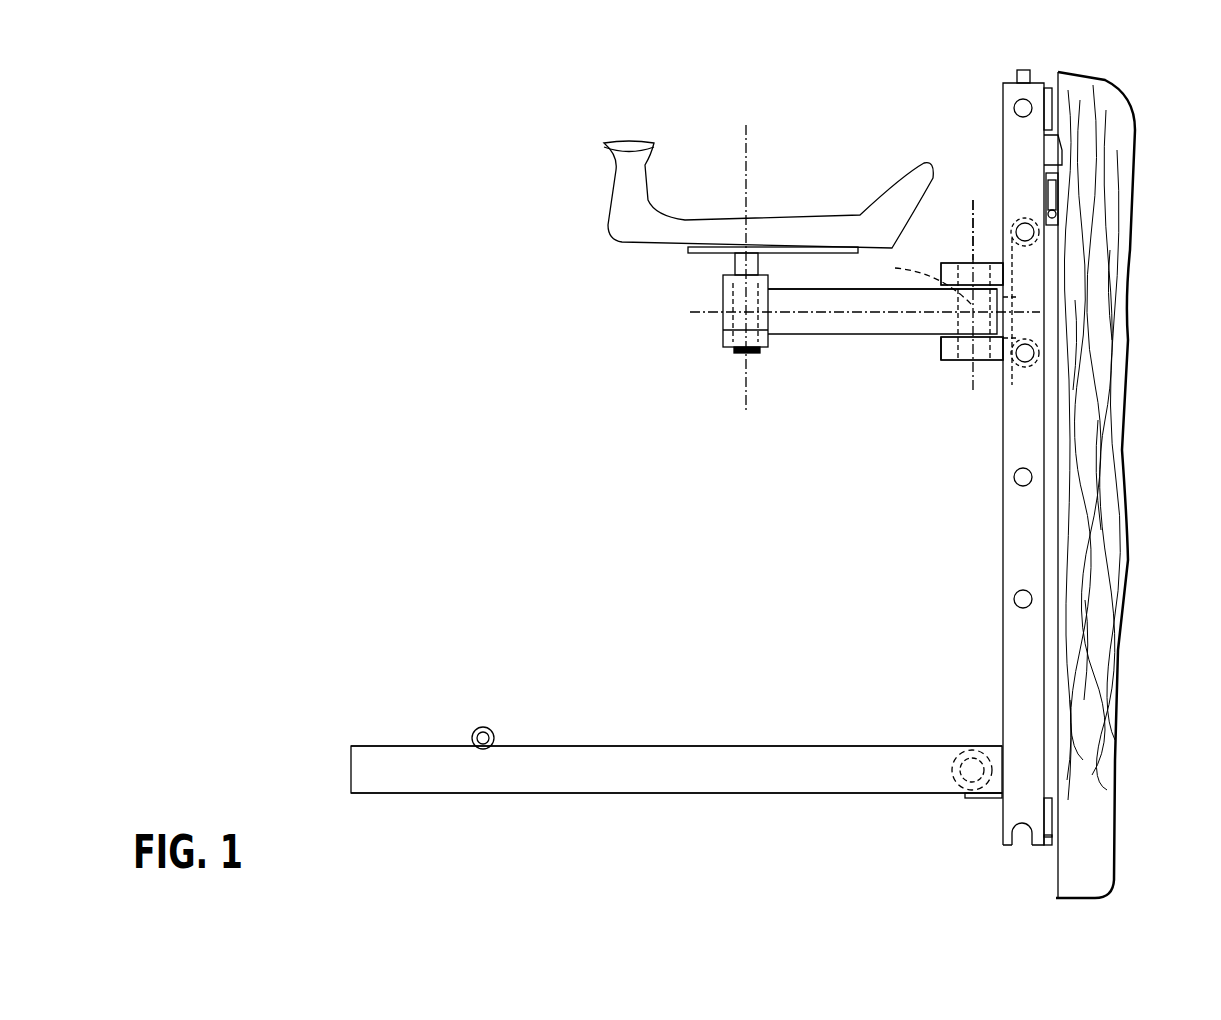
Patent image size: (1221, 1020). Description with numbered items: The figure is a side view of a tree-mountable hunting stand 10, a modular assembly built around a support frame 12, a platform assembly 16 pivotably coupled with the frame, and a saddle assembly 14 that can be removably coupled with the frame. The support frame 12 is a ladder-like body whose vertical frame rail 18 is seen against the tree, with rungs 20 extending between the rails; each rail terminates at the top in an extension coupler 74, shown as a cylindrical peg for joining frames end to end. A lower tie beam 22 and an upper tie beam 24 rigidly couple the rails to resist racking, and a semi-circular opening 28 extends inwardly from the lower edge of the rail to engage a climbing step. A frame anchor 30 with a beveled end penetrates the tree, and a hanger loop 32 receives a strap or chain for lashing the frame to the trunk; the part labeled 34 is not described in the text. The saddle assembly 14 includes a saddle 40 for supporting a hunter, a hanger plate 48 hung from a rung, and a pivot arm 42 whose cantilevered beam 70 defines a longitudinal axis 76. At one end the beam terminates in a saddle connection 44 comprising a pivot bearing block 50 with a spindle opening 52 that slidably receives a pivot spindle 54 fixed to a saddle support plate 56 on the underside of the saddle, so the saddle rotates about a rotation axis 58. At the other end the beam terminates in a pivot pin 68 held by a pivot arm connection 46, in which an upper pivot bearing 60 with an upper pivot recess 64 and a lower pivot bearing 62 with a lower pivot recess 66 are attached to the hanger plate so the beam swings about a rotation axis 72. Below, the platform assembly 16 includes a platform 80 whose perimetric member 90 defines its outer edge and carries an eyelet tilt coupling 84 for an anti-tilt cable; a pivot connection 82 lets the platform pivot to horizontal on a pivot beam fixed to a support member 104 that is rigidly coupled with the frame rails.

The tree-mountable hunting stand 10 is at (401, 211).
The support frame 12 is at (977, 651).
The saddle assembly 14 is at (740, 378).
The platform assembly 16 is at (578, 731).
The frame rail 18 is at (1030, 667).
The rung 20 is at (1025, 108).
The lower tie beam 22 is at (1052, 798).
The upper tie beam 24 is at (1052, 120).
The semi-circular opening 28 is at (1022, 843).
The frame anchor 30 is at (1060, 152).
The hanger loop 32 is at (1058, 190).
The fastener 34 is at (1056, 215).
The saddle 40 is at (777, 205).
The pivot arm 42 is at (869, 338).
The saddle connection 44 is at (722, 310).
The pivot arm connection 46 is at (958, 362).
The hanger plate 48 is at (1020, 297).
The pivot bearing block 50 is at (728, 333).
The spindle opening 52 is at (748, 355).
The pivot spindle 54 is at (723, 292).
The saddle support plate 56 is at (715, 250).
The rotation axis 58 is at (746, 130).
The upper pivot bearing 60 is at (946, 272).
The lower pivot bearing 62 is at (946, 345).
The upper pivot recess 64 is at (985, 262).
The lower pivot recess 66 is at (985, 368).
The pivot pin 68 is at (921, 278).
The cantilevered beam 70 is at (812, 325).
The rotation axis 72 is at (970, 215).
The extension coupler 74 is at (1015, 77).
The longitudinal axis 76 is at (838, 314).
The platform 80 is at (497, 795).
The pivot connection 82 is at (964, 793).
The tilt coupling 84 is at (475, 732).
The perimetric member 90 is at (614, 780).
The support member 104 is at (985, 800).